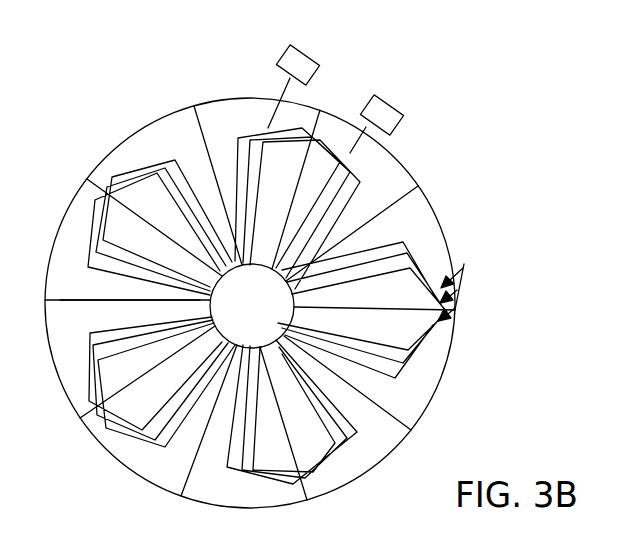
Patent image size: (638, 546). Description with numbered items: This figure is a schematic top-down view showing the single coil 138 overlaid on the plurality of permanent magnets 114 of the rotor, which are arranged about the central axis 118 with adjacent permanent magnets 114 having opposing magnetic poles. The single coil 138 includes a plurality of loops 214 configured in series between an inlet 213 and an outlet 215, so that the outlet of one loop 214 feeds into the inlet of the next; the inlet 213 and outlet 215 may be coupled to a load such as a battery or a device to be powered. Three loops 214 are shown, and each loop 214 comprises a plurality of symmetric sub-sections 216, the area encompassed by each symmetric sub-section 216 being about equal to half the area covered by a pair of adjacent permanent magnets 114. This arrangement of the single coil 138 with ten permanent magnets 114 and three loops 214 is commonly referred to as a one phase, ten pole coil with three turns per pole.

The permanent magnet 114 is at (250, 130).
The central axis 118 is at (253, 305).
The single coil 138 is at (311, 303).
The inlet 213 is at (287, 53).
The loop 214 is at (462, 277).
The outlet 215 is at (397, 130).
The symmetric sub-section 216 is at (125, 320).